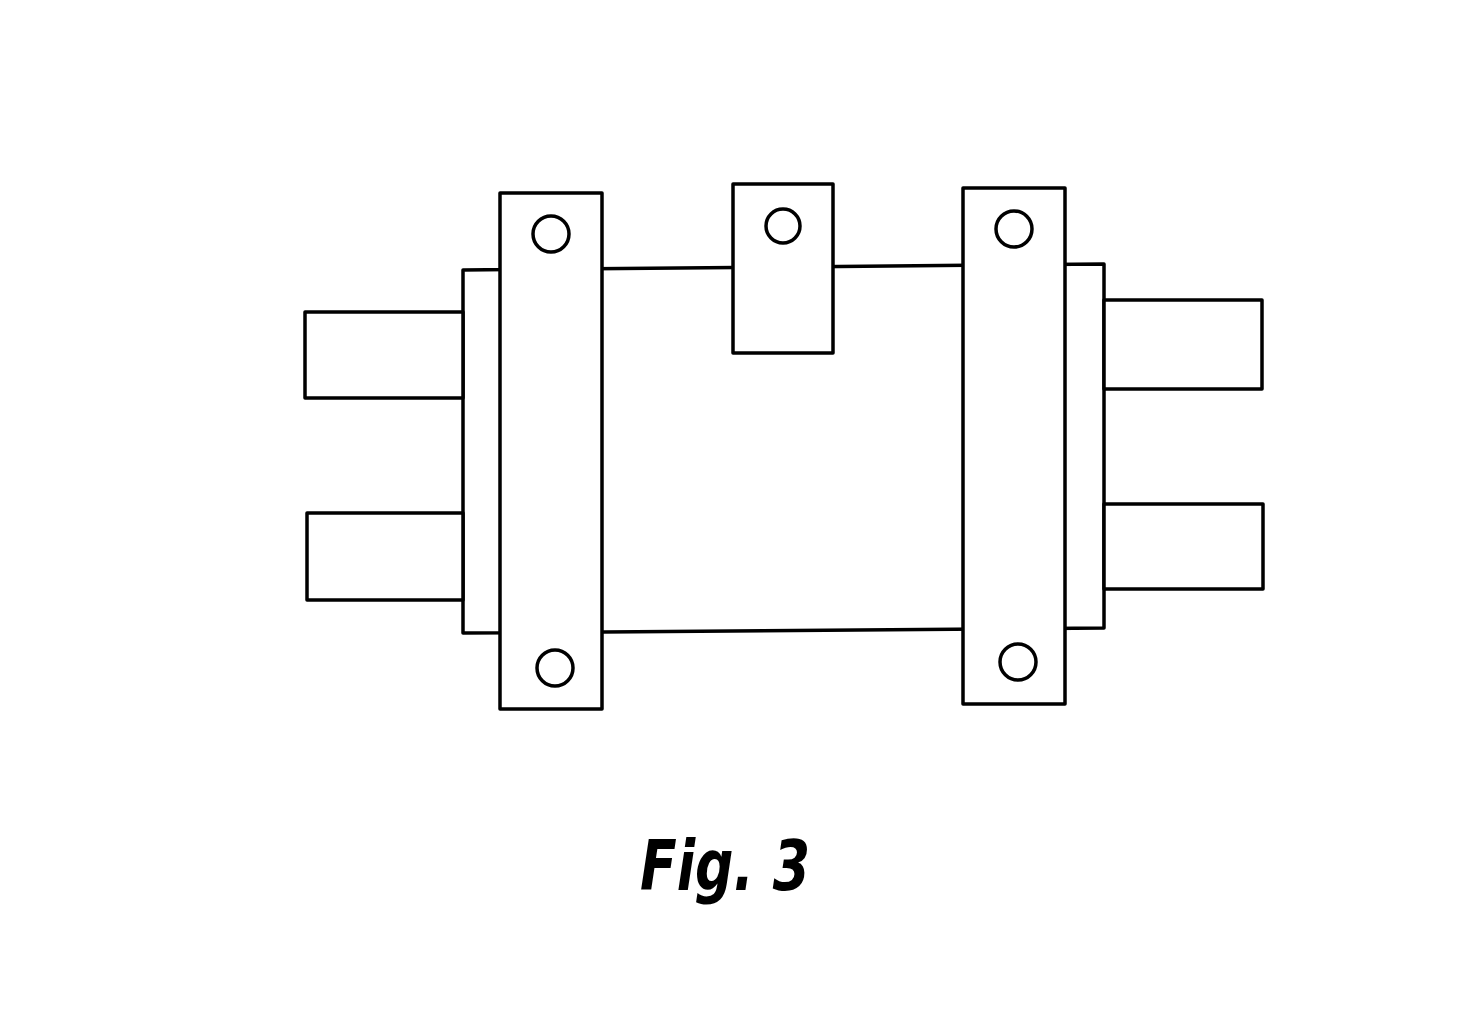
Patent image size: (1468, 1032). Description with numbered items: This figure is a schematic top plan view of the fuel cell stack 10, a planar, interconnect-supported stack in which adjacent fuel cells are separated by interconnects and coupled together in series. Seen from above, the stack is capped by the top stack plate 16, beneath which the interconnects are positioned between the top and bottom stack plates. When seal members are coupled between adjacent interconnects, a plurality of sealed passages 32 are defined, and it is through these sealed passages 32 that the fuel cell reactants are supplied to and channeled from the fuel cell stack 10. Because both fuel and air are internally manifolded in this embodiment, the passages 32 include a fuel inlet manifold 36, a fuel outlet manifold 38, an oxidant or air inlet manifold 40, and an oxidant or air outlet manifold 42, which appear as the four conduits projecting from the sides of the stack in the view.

The fuel cell stack 10 is at (1178, 112).
The top stack plate 16 is at (773, 633).
The sealed passages 32 is at (283, 420).
The fuel inlet manifold 36 is at (305, 353).
The fuel outlet manifold 38 is at (1245, 589).
The air inlet manifold 40 is at (1207, 299).
The air outlet manifold 42 is at (308, 565).